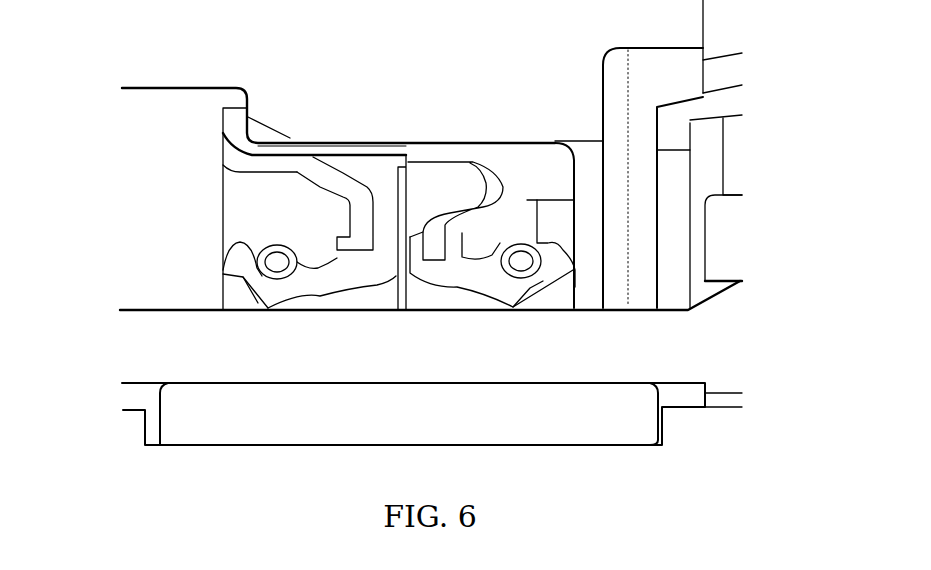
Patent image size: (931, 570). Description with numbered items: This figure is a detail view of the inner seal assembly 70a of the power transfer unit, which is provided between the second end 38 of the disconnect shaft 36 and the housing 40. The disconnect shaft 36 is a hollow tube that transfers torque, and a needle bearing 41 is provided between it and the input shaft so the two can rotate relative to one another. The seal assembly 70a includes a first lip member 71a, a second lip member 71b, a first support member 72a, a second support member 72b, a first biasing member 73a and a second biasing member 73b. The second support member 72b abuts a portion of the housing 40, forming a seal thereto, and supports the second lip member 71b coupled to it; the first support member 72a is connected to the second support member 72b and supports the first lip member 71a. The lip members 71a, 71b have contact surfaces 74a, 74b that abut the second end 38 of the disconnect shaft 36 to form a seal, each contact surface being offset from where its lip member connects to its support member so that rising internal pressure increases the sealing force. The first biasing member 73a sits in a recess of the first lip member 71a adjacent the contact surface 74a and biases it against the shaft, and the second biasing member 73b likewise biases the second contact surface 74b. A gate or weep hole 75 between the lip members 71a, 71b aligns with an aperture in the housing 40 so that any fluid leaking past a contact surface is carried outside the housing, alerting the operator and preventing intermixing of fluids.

The disconnect shaft 36 is at (723, 340).
The second end 38 is at (304, 354).
The housing 40 is at (441, 83).
The needle bearing 41 is at (384, 425).
The inner seal assembly 70a is at (330, 100).
The first lip member 71a is at (238, 272).
The second lip member 71b is at (548, 283).
The first support member 72a is at (320, 176).
The second support member 72b is at (437, 153).
The first biasing member 73a is at (277, 262).
The second biasing member 73b is at (515, 265).
The first contact surface 74a is at (258, 304).
The second contact surface 74b is at (543, 282).
The gate or weep hole 75 is at (397, 300).